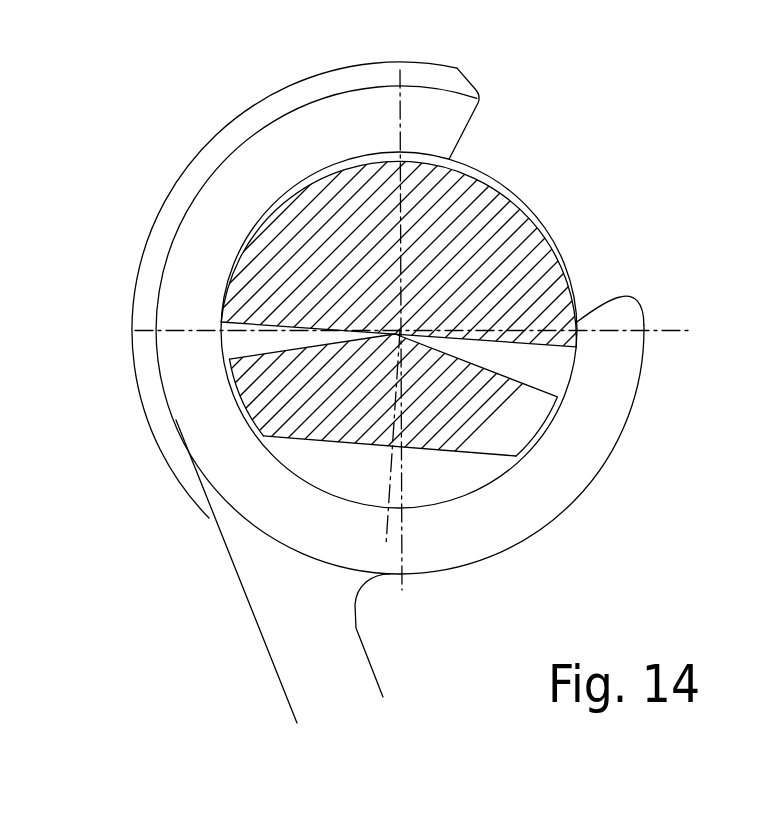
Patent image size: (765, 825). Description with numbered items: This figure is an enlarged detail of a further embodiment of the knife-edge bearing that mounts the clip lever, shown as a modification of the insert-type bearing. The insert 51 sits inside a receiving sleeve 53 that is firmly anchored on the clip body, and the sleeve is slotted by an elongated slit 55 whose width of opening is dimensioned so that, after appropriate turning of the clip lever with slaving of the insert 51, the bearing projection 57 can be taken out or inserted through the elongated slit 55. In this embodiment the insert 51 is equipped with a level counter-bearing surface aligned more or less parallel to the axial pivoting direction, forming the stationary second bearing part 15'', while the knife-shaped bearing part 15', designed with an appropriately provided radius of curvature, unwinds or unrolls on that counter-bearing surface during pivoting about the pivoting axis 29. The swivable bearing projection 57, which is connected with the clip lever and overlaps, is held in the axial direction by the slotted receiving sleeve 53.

The stationary second bearing part 15'' is at (382, 319).
The knife-shaped bearing part 15' is at (382, 350).
The pivoting axis 29 is at (223, 323).
The insert 51 is at (462, 317).
The receiving sleeve 53 is at (556, 435).
The elongated slit 55 is at (418, 370).
The bearing projection 57 is at (490, 490).